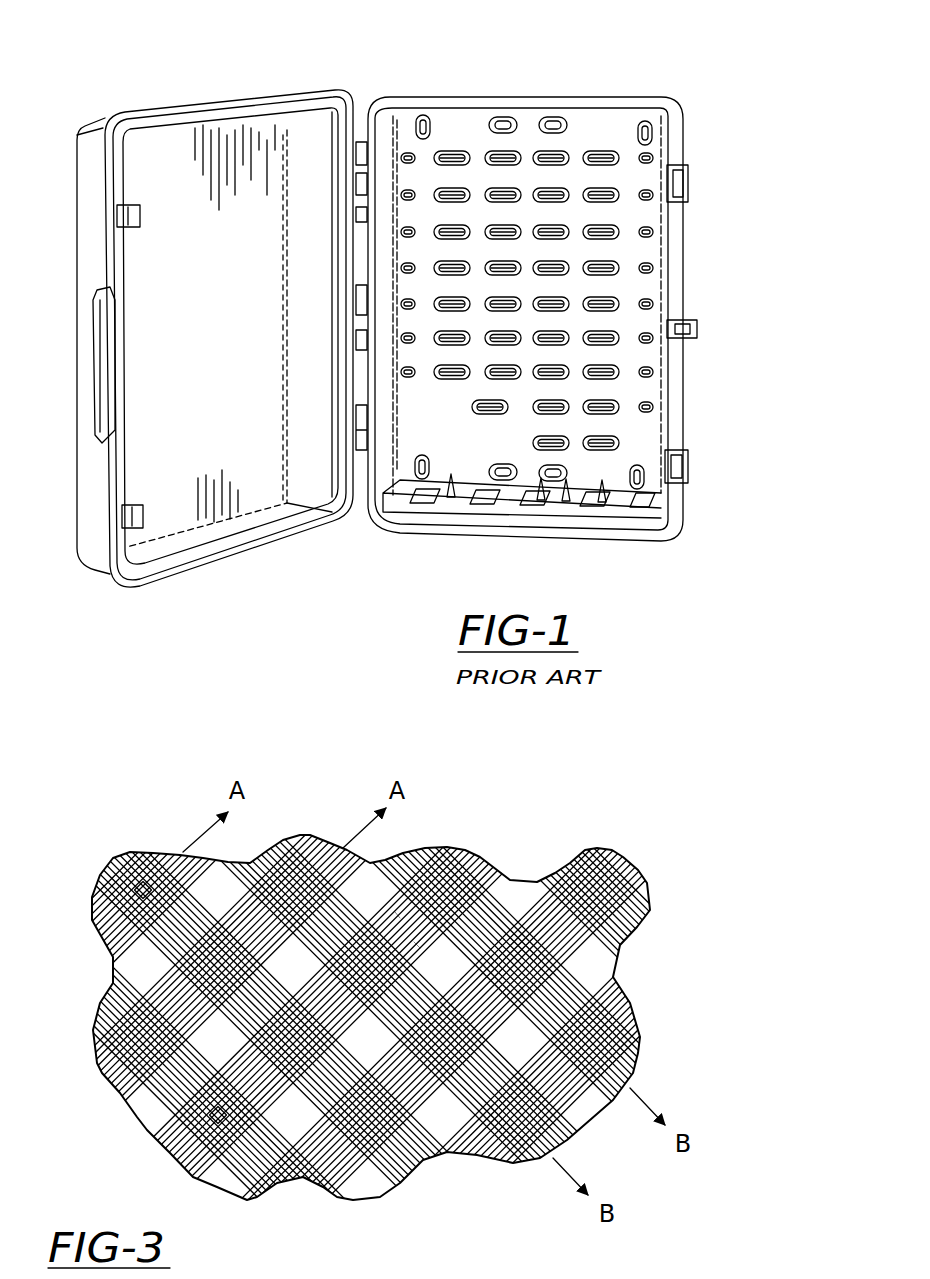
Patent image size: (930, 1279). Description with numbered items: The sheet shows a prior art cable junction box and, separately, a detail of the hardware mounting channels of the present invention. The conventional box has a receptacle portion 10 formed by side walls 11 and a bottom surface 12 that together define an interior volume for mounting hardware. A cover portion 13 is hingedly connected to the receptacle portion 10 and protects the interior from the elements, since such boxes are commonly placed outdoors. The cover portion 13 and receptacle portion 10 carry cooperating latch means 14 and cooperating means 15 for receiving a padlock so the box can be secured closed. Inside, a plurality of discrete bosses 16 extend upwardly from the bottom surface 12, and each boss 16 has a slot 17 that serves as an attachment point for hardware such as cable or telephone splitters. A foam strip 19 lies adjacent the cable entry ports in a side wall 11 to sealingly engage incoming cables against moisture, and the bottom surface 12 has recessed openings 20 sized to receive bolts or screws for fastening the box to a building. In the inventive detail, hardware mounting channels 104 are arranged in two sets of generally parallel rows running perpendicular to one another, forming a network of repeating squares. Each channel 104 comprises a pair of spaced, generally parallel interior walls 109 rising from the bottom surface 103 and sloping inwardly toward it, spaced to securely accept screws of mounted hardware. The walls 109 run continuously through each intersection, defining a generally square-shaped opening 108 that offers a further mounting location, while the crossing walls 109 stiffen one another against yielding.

In FIG. 1, the receptacle portion 10 is at (722, 126).
In FIG. 1, the side walls 11 is at (527, 97).
In FIG. 1, the bottom surface 12 is at (420, 425).
In FIG. 1, the cover portion 13 is at (210, 84).
In FIG. 1, the latch means 14 is at (142, 222).
In FIG. 1, the means for receiving a padlock 15 is at (100, 360).
In FIG. 1, the bosses 16 is at (452, 152).
In FIG. 1, the slot 17 is at (450, 155).
In FIG. 1, the foam strip 19 is at (442, 505).
In FIG. 1, the recessed openings 20 is at (647, 125).
In FIG. 3, the bottom surface 103 is at (534, 1057).
In FIG. 3, the hardware mounting channels 104 is at (492, 914).
In FIG. 3, the square-shaped opening 108 is at (135, 875).
In FIG. 3, the interior walls 109 is at (398, 915).